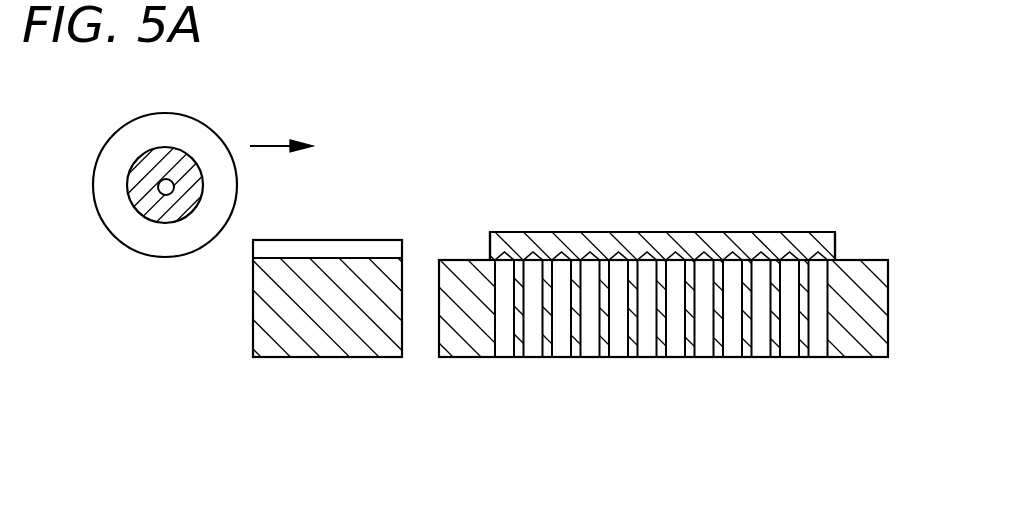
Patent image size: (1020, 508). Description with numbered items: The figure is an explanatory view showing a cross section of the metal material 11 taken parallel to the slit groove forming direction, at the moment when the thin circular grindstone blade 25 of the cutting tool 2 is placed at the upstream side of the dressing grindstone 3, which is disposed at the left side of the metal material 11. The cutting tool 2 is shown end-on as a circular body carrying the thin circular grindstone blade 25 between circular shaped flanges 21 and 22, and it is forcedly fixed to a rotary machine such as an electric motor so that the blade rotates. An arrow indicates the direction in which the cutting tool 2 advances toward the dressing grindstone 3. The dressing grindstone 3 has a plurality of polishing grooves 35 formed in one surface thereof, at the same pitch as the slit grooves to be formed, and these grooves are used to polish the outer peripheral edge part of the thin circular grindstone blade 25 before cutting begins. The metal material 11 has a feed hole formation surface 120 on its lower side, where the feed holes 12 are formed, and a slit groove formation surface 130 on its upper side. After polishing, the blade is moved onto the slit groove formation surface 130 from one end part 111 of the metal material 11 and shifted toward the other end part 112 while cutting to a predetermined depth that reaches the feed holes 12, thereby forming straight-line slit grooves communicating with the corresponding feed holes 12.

The cutting tool 2 is at (208, 226).
The circular shaped flange 21 is at (140, 148).
The circular shaped flange 22 is at (146, 178).
The thin circular grindstone blade 25 is at (130, 227).
The dressing grindstone 3 is at (370, 291).
The polishing grooves 35 is at (360, 257).
The metal material 11 is at (670, 319).
The one end part 111 is at (490, 248).
The other end part 112 is at (837, 247).
The feed holes 12 is at (646, 328).
The feed hole formation surface 120 is at (544, 359).
The slit groove formation surface 130 is at (507, 226).